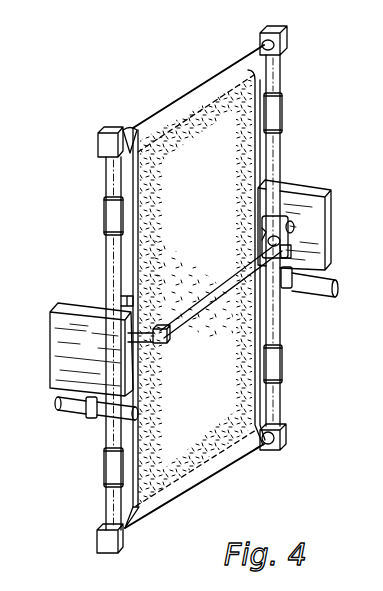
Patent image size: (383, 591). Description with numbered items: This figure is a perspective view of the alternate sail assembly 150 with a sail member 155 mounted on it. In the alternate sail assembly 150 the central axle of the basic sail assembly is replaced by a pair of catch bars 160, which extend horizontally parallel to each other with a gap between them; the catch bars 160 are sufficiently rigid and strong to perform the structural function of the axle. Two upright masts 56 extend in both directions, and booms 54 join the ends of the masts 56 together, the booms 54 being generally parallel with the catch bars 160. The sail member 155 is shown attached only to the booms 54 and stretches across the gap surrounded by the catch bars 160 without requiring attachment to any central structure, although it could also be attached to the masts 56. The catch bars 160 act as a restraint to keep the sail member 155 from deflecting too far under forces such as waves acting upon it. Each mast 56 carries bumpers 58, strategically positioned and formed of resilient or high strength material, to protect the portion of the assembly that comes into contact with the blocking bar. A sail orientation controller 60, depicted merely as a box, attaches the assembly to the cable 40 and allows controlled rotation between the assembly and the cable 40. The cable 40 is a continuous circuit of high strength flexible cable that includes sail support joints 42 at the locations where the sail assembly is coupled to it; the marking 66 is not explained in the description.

The alternate sail assembly 150 is at (128, 82).
The sail member 155 is at (201, 214).
The catch bar 160 is at (193, 318).
The boom 54 is at (128, 127).
The mast 56 is at (112, 177).
The bumper 58 is at (108, 220).
The sail orientation controller 60 is at (72, 325).
The base block 66 is at (102, 359).
The cable 40 is at (70, 412).
The sail support joint 42 is at (89, 416).